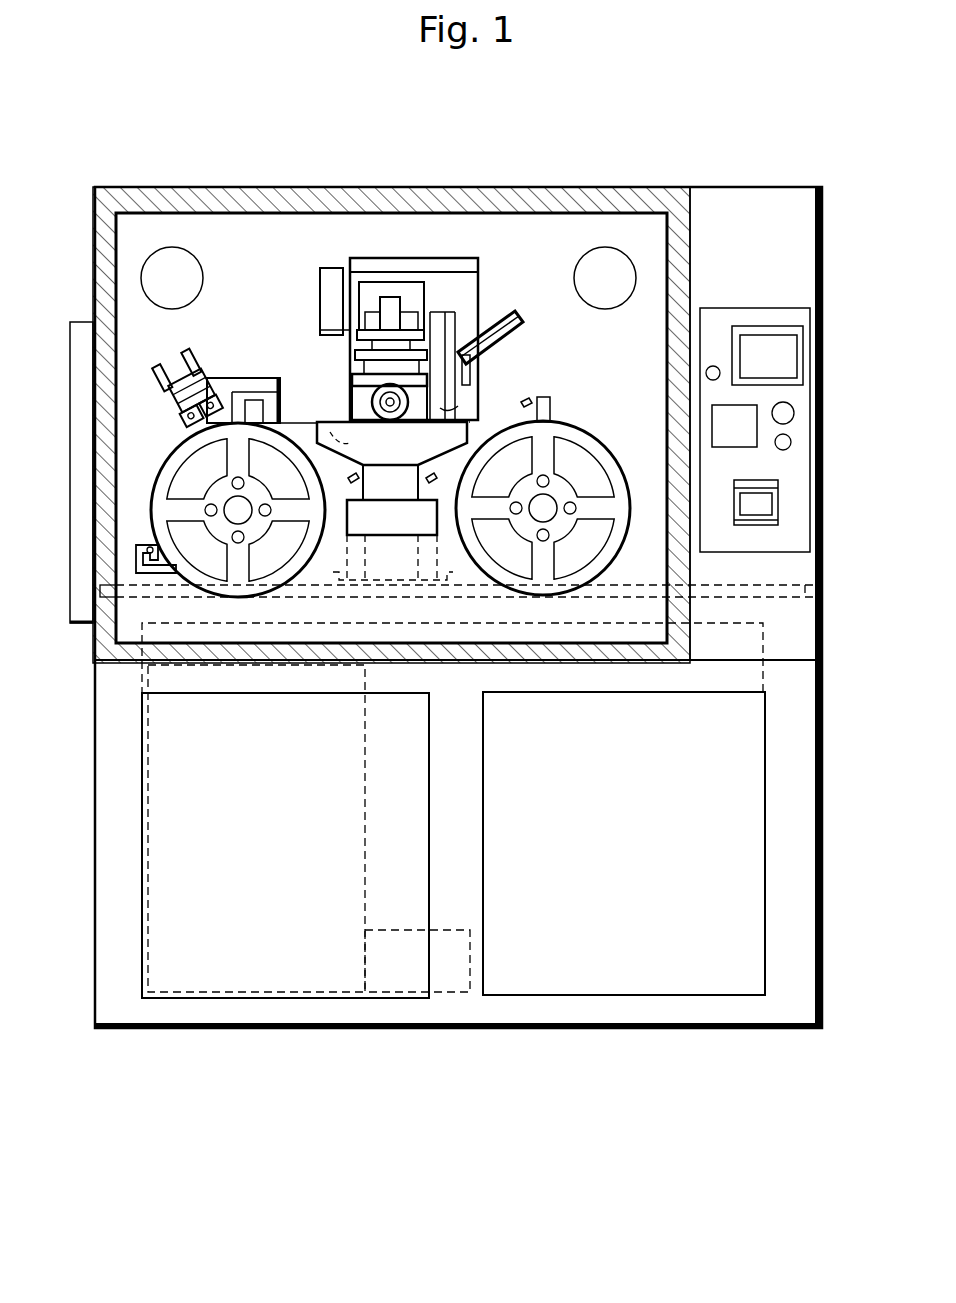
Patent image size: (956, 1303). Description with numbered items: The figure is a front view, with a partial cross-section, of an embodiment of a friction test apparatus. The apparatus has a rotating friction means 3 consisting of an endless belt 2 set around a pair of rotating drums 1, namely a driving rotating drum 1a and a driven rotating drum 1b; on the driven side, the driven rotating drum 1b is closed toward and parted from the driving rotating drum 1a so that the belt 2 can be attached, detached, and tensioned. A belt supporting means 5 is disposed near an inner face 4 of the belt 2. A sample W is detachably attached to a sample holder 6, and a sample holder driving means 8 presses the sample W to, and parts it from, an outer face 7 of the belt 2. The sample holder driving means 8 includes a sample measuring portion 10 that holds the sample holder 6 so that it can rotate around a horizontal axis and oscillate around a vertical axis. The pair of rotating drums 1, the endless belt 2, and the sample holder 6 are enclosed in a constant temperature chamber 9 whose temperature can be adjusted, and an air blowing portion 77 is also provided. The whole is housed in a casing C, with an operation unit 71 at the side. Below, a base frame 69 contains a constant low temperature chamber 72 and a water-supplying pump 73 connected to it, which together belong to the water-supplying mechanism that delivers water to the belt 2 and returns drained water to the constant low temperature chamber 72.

The rotating drums 1 is at (392, 578).
The driving rotating drum 1a is at (545, 598).
The driven rotating drum 1b is at (238, 598).
The endless belt 2 is at (298, 423).
The rotating friction means 3 is at (150, 455).
The inner face of the belt 4 is at (353, 440).
The belt supporting means 5 is at (397, 482).
The sample holder 6 is at (402, 394).
The outer face of the belt 7 is at (484, 420).
The sample holder driving means 8 is at (411, 264).
The constant temperature chamber 9 is at (601, 183).
The sample measuring portion 10 is at (470, 256).
The base frame 69 is at (172, 1030).
The operation unit 71 is at (770, 312).
The constant low temperature chamber 72 is at (370, 830).
The water-supplying pump 73 is at (476, 956).
The air blowing portion 77 is at (146, 552).
The casing C is at (758, 183).
The sample W is at (455, 408).